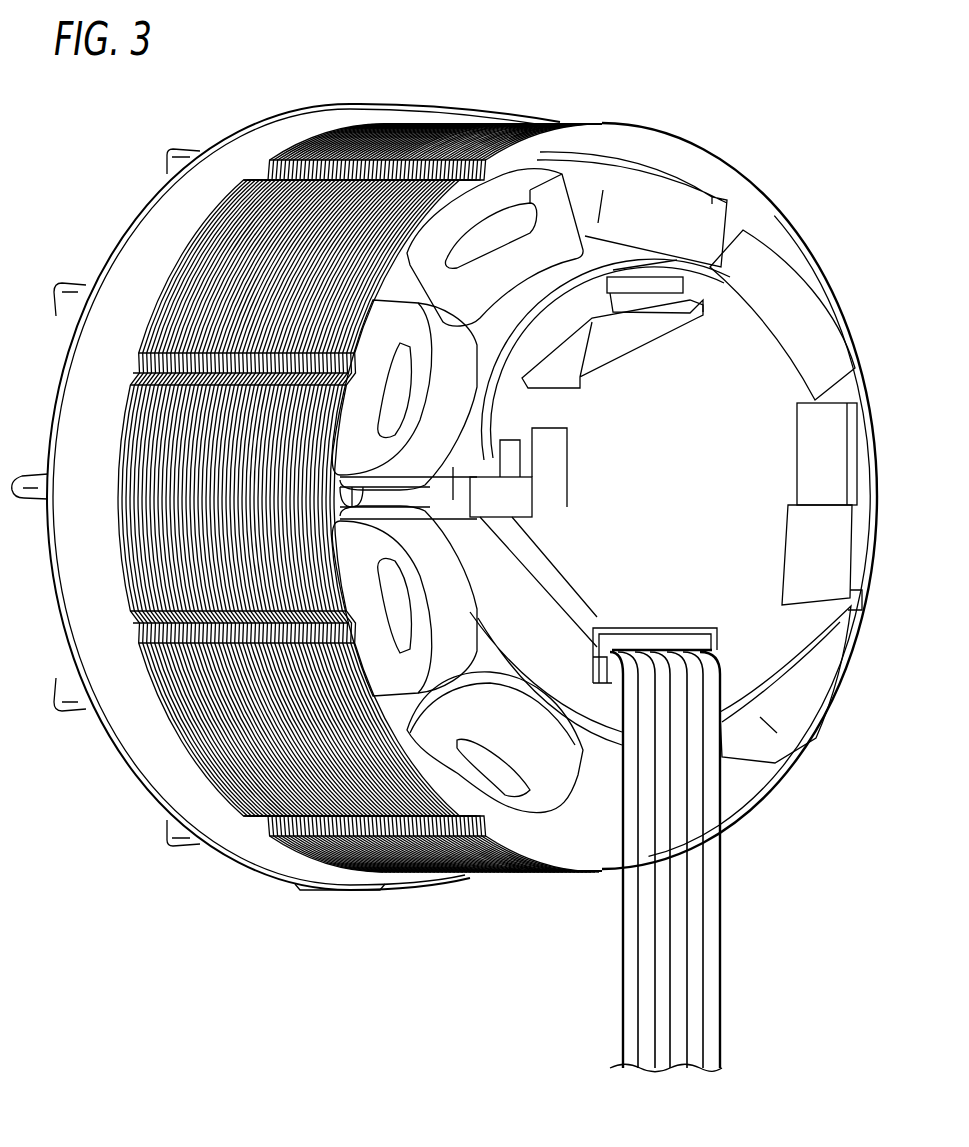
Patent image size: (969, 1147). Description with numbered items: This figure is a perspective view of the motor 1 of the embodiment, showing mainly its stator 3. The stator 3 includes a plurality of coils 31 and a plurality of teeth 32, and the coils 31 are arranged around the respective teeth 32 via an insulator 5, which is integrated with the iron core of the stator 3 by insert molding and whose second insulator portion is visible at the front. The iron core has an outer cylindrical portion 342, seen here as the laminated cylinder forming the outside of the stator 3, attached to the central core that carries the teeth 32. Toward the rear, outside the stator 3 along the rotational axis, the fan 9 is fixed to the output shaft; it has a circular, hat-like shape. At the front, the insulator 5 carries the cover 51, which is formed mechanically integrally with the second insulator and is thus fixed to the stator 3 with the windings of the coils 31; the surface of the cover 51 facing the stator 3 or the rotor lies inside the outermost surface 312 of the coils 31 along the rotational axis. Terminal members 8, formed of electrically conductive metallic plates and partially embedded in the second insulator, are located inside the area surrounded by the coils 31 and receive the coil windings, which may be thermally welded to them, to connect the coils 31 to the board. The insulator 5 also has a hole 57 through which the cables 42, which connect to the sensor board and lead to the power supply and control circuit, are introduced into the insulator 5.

The motor 1 is at (758, 118).
The stator 3 is at (444, 872).
The insulator 5 is at (742, 337).
The terminal members 8 is at (820, 429).
The fan 9 is at (100, 692).
The coils 31 is at (520, 245).
The teeth 32 is at (663, 177).
The outermost surface 312 is at (805, 303).
The outer cylindrical portion 342 is at (187, 710).
The cables 42 is at (713, 962).
The cover 51 is at (468, 660).
The hole 57 is at (603, 685).